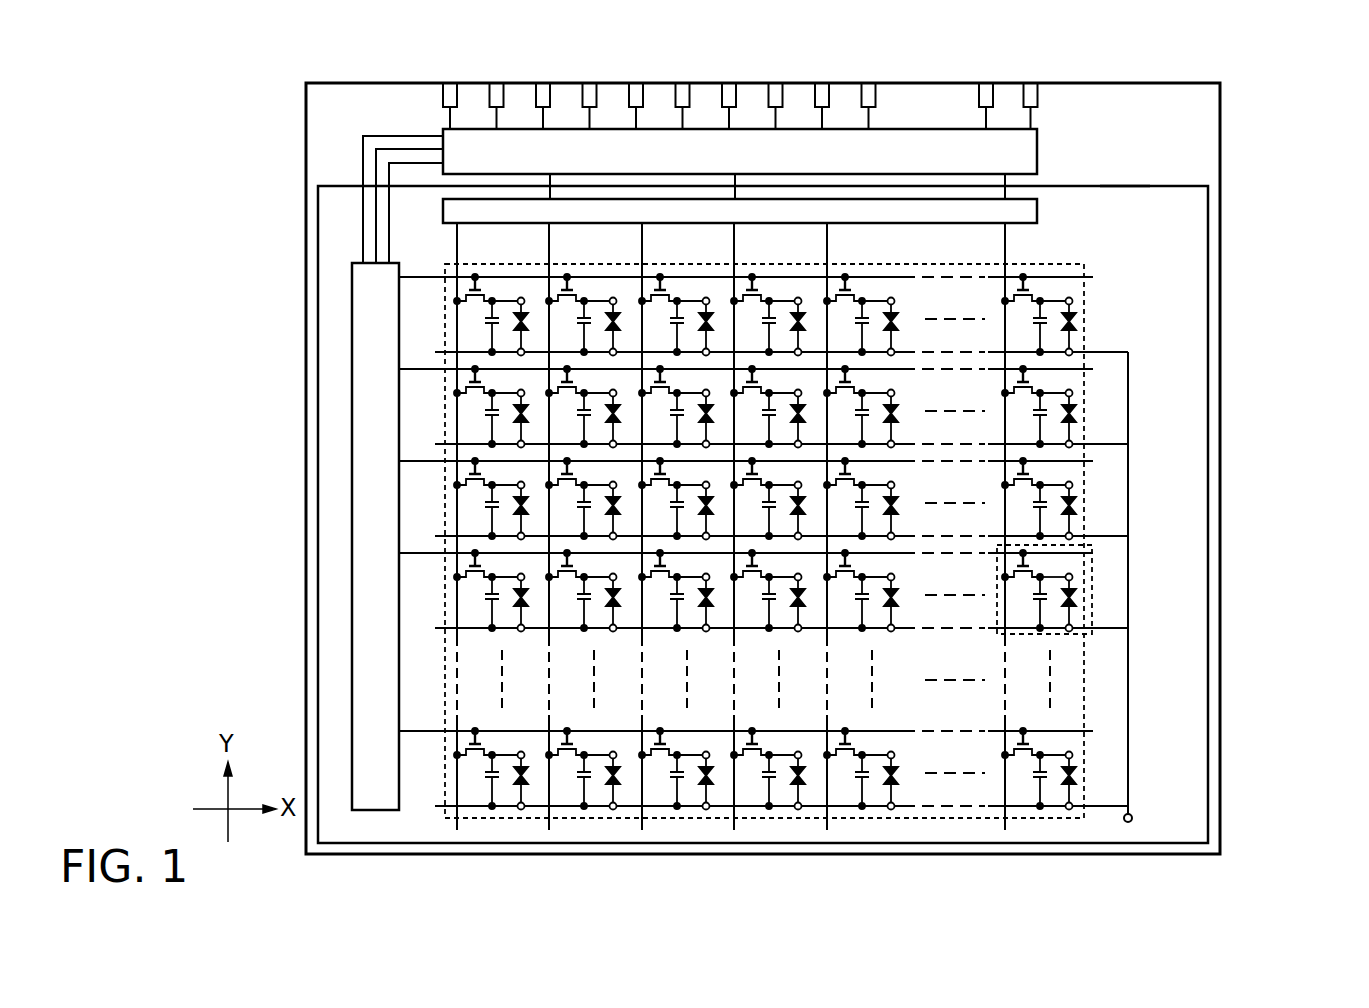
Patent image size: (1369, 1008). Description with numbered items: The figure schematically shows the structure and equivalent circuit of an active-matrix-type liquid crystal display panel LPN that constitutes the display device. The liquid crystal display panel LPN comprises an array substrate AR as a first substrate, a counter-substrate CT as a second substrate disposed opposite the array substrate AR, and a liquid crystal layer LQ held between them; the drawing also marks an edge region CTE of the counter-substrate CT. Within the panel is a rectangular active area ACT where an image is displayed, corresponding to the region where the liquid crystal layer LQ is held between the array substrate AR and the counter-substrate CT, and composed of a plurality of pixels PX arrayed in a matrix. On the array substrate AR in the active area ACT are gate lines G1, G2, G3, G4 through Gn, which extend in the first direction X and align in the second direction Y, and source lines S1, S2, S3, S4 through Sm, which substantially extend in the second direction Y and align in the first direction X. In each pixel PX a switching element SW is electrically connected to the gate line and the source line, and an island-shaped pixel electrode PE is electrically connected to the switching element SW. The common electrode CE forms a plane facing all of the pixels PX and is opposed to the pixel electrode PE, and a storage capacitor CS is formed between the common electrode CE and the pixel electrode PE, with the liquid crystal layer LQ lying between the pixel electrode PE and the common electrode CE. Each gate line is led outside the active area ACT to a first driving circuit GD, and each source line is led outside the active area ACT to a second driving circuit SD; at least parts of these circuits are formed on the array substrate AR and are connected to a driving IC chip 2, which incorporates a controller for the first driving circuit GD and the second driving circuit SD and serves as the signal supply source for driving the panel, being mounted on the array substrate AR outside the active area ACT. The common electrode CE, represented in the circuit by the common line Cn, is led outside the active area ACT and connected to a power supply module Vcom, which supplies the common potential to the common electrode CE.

The liquid crystal display panel LPN is at (1270, 86).
The array substrate AR is at (1204, 140).
The counter-substrate edge / sealing region CTE is at (1123, 181).
The counter-substrate CT is at (1210, 243).
The driving IC chip 2 is at (1037, 130).
The second driving circuit SD is at (1038, 211).
The first driving circuit GD is at (353, 660).
The gate line G1 is at (412, 277).
The gate line G2 is at (412, 369).
The gate line G3 is at (412, 461).
The gate line G4 is at (412, 553).
The gate line Gn is at (412, 731).
The source line S1 is at (458, 243).
The source line S2 is at (550, 243).
The source line S3 is at (643, 243).
The source line S4 is at (735, 243).
The source line Sm is at (1006, 243).
The active area ACT is at (1084, 383).
The pixel PX is at (1087, 634).
The switching element SW is at (1003, 567).
The storage capacitor CS is at (1024, 602).
The pixel electrode PE is at (1073, 575).
The liquid crystal layer LQ is at (1077, 596).
The common electrode CE is at (1073, 627).
The common line Cn is at (1105, 806).
The power supply module Vcom is at (1133, 818).